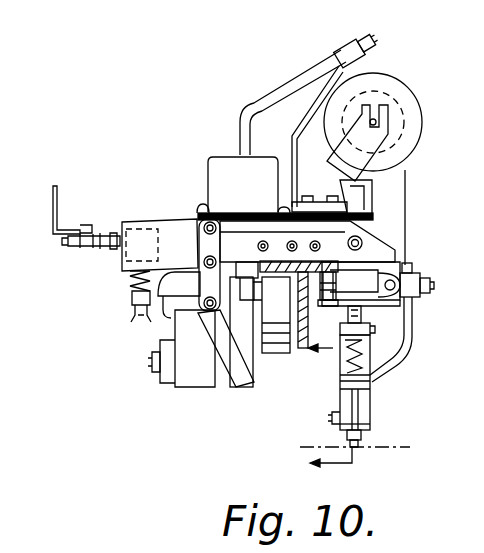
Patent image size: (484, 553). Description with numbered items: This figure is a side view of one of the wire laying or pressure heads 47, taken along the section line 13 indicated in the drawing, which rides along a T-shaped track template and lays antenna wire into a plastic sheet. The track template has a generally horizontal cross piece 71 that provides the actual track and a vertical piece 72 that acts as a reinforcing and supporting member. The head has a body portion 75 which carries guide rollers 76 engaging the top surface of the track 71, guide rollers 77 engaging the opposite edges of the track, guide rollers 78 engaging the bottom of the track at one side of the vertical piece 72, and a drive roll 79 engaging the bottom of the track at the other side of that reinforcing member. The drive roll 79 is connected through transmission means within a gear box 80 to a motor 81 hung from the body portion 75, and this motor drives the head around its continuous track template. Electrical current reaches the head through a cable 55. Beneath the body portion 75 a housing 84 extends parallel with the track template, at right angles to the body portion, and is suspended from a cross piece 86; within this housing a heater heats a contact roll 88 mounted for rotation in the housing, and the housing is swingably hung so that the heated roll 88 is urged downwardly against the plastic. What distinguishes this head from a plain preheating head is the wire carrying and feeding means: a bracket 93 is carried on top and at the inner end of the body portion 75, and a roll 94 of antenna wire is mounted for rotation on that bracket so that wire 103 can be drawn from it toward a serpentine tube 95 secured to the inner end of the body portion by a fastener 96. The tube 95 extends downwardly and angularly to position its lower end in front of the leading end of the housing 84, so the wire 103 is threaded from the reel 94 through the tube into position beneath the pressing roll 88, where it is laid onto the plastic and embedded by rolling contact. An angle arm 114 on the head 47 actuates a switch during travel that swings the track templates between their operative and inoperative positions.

The section line 13- 13 is at (327, 372).
The wire laying head 47 is at (198, 139).
The cable 55 is at (267, 100).
The cross piece 71 is at (298, 238).
The vertical piece 72 is at (302, 349).
The body portion 75 is at (356, 233).
The guide rollers 76 is at (292, 256).
The guide rollers 77 is at (212, 257).
The guide rollers 78 is at (325, 304).
The drive roll 79 is at (282, 331).
The gear box 80 is at (242, 313).
The motor 81 is at (193, 357).
The housing 84 is at (380, 388).
The cross piece 86 is at (357, 330).
The contact roll 88 is at (367, 437).
The bracket 93 is at (348, 158).
The roll of antenna wire 94 is at (410, 138).
The serpentine tube 95 is at (407, 345).
The fastener 96 is at (420, 282).
The wire 103 is at (408, 183).
The angle arm 114 is at (60, 199).